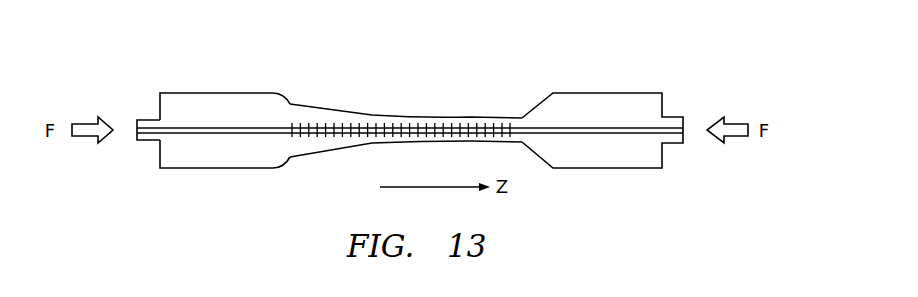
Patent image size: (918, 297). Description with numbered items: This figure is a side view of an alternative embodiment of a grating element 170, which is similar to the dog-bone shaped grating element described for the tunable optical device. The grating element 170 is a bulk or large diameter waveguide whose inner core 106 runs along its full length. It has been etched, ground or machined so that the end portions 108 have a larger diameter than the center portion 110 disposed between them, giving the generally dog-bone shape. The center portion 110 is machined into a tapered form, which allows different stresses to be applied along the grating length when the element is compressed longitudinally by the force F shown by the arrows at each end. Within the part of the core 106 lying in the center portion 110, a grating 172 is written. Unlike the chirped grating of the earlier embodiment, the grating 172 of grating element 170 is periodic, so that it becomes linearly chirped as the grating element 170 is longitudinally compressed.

The grating element 170 is at (487, 73).
The end portions 108 is at (193, 92).
The center portion 110 is at (403, 117).
The inner core 106 is at (193, 134).
The grating 172 is at (330, 125).